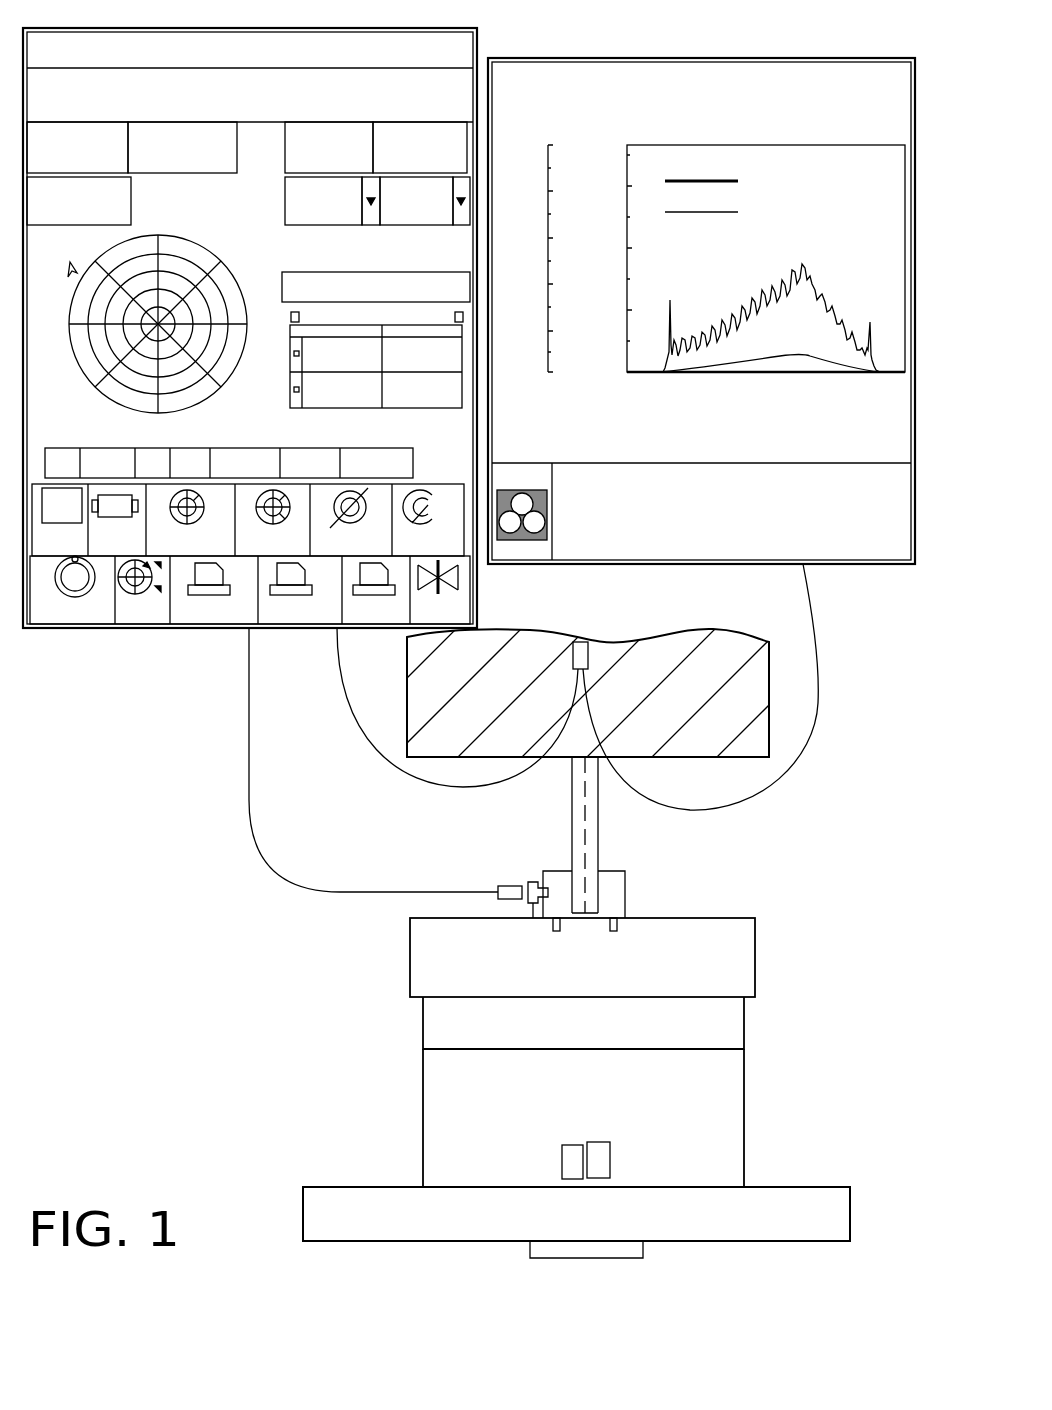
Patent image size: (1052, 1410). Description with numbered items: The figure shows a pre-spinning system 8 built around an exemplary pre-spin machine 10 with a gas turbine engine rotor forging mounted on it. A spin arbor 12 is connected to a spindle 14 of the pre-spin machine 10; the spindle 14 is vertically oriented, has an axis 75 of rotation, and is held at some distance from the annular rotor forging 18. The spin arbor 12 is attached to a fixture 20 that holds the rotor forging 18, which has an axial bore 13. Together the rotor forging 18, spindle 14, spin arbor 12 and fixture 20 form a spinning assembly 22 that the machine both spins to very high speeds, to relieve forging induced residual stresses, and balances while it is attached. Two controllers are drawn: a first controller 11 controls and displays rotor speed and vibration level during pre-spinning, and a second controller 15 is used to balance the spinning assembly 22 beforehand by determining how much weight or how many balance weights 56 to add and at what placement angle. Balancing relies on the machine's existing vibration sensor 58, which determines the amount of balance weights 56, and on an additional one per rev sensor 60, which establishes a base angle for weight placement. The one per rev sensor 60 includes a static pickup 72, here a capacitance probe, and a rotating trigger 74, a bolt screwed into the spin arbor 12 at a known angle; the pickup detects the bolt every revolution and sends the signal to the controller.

The pre-spinning system 8 is at (178, 1149).
The pre-spin machine 10 is at (727, 630).
The first controller 11 is at (825, 564).
The spin arbor 12 is at (625, 889).
The axial bore 13 is at (423, 1095).
The spindle 14 is at (572, 805).
The second controller 15 is at (180, 628).
The rotor forging 18 is at (423, 1150).
The fixture 20 is at (670, 918).
The spinning assembly 22 is at (773, 1187).
The balance weights 56 is at (610, 1160).
The vibration sensor 58 is at (588, 650).
The one per rev sensor 60 is at (521, 881).
The static pickup 72 is at (500, 897).
The rotating trigger 74 is at (533, 905).
The axis of rotation 75 is at (585, 845).